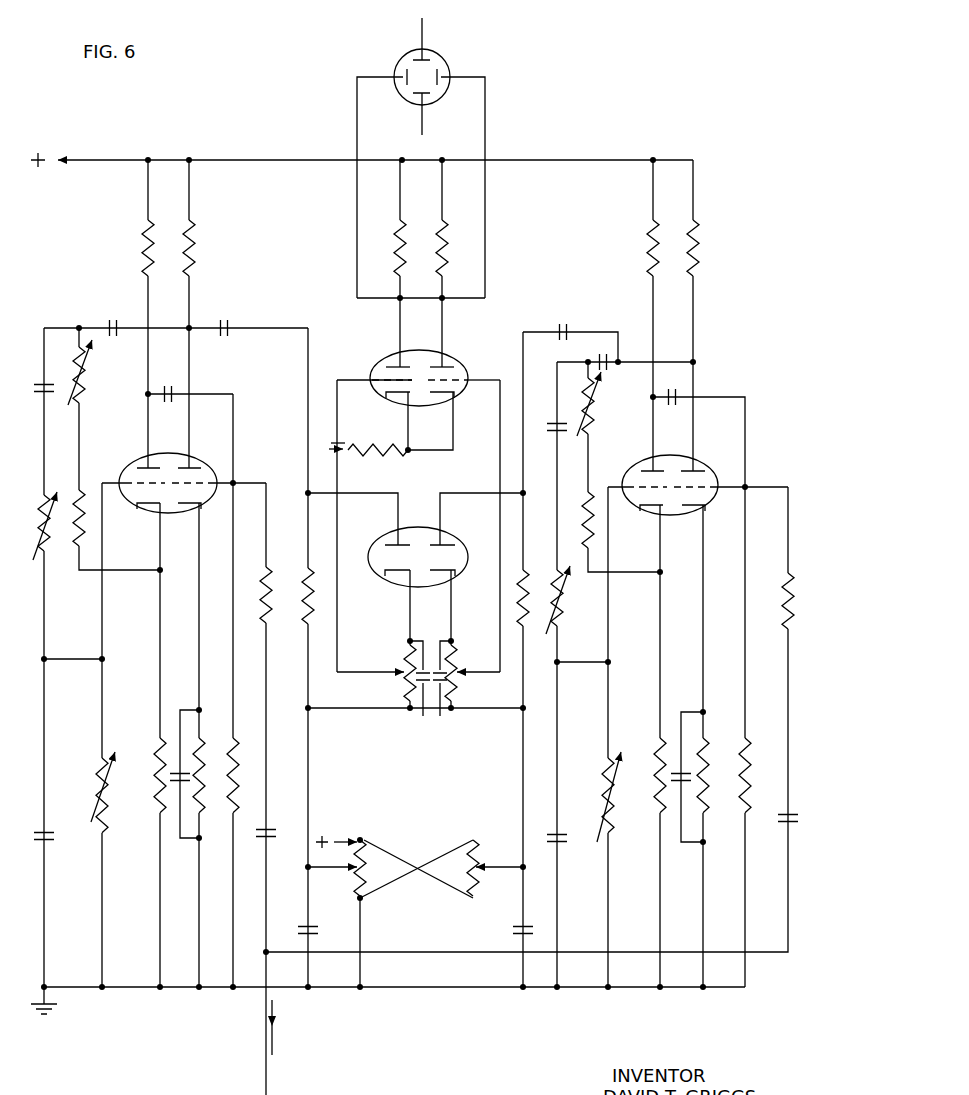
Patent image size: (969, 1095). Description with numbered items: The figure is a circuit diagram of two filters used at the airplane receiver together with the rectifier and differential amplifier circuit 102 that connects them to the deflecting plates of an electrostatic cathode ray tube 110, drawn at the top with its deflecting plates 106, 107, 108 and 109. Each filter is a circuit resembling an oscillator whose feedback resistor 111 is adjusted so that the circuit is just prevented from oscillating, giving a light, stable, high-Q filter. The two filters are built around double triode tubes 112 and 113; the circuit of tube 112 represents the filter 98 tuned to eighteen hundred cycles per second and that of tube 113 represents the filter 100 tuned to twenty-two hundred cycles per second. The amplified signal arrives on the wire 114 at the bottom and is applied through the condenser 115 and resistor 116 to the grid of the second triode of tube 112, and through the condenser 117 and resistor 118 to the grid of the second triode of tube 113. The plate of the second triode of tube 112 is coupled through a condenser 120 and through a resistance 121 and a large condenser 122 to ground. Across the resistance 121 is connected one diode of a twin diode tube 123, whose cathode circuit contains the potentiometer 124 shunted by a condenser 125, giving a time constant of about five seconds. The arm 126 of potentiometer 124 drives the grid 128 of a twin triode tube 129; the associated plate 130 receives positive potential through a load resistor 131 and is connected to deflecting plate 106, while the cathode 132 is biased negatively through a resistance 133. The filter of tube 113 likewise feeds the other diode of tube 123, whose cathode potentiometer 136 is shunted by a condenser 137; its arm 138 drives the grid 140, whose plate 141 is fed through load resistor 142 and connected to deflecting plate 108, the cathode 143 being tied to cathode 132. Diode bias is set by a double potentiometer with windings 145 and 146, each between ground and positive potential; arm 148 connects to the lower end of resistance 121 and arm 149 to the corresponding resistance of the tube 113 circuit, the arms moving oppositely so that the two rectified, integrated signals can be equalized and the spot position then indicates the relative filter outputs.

The filter 98 is at (72, 318).
The filter 100 is at (716, 250).
The rectifier and differential amplifier circuit 102 is at (542, 143).
The deflecting plate 106 is at (398, 66).
The deflecting plate 107 is at (425, 56).
The deflecting plate 108 is at (455, 76).
The deflecting plate 109 is at (433, 93).
The electrostatic cathode ray tube 110 is at (456, 55).
The feedback resistor 111 is at (85, 392).
The double triode tube 112 is at (140, 462).
The double triode tube 113 is at (698, 456).
The wire 114 is at (264, 1000).
The condenser 115 is at (270, 828).
The resistor 116 is at (264, 600).
The condenser 117 is at (780, 822).
The resistor 118 is at (786, 600).
The condenser 120 is at (228, 328).
The resistance 121 is at (306, 590).
The large condenser 122 is at (314, 937).
The twin diode tube 123 is at (382, 535).
The potentiometer 124 is at (404, 656).
The condenser 125 is at (422, 716).
The arm 126 is at (386, 673).
The grid 128 is at (383, 378).
The twin triode tube 129 is at (378, 358).
The plate 130 is at (393, 352).
The load resistor 131 is at (396, 240).
The cathode 132 is at (394, 396).
The resistance 133 is at (390, 456).
The potentiometer 136 is at (457, 662).
The condenser 137 is at (443, 716).
The arm 138 is at (470, 675).
The grid 140 is at (456, 382).
The plate 141 is at (452, 356).
The load resistor 142 is at (445, 240).
The cathode 143 is at (444, 397).
The winding 145 is at (386, 850).
The winding 146 is at (458, 856).
The arm 148 is at (343, 867).
The arm 149 is at (505, 867).